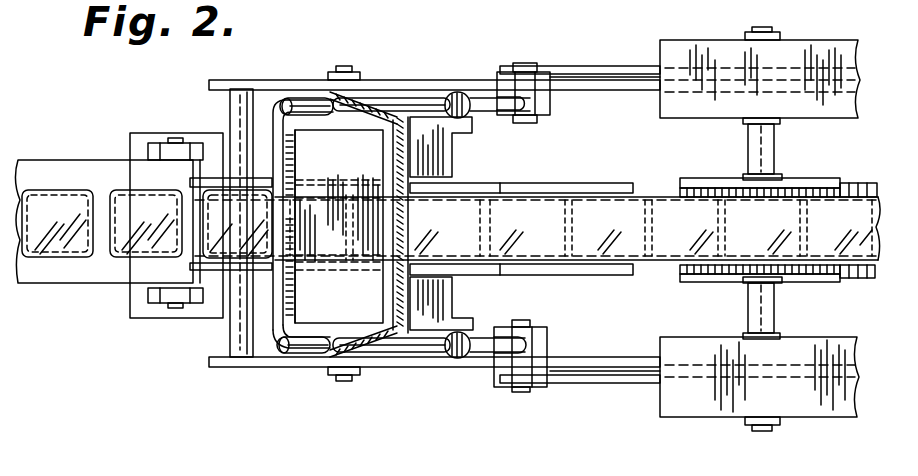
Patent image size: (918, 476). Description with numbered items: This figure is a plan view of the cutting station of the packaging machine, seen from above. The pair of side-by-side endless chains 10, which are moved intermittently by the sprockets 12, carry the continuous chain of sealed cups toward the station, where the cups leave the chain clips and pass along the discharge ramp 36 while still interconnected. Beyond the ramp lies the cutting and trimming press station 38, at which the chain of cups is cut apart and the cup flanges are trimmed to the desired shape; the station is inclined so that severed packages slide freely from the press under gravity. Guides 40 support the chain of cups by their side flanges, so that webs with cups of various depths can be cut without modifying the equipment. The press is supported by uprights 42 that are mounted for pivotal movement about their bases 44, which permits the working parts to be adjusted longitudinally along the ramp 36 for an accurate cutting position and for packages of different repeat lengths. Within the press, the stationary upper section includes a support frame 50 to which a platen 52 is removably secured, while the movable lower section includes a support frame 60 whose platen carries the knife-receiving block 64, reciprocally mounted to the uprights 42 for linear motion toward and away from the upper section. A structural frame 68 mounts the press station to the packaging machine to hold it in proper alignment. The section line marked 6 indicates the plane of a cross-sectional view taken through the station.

The section line 6- 6 is at (263, 180).
The endless chains 10 is at (856, 184).
The sprockets 12 is at (696, 186).
The discharge ramp 36 is at (607, 177).
The cutting and trimming press station 38 is at (345, 66).
The guides 40 is at (528, 196).
The uprights 42 is at (310, 99).
The bases 44 is at (540, 107).
The support frame 50 is at (277, 135).
The platen 52 is at (318, 177).
The support frame 60 is at (449, 163).
The knife-receiving block 64 is at (432, 286).
The structural frame 68 is at (390, 79).